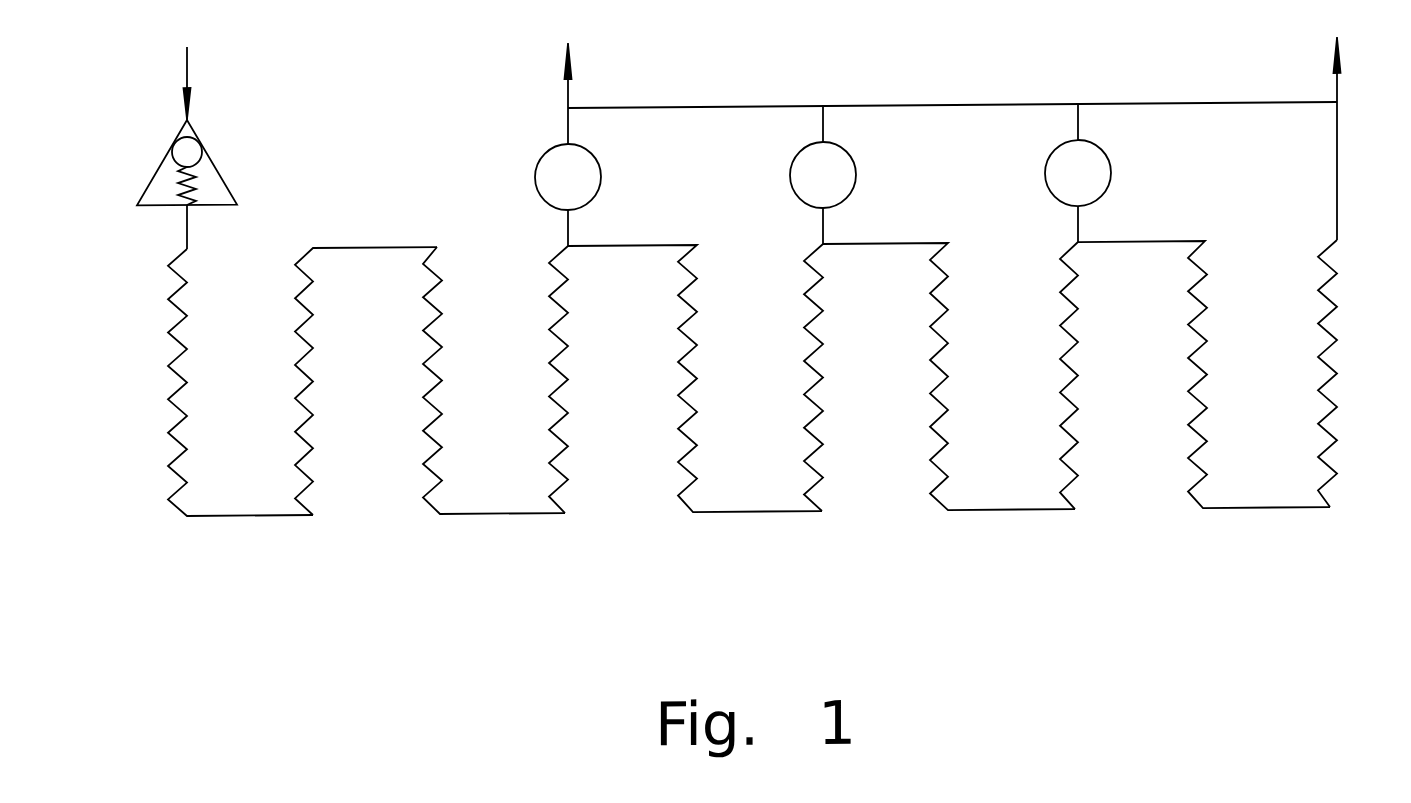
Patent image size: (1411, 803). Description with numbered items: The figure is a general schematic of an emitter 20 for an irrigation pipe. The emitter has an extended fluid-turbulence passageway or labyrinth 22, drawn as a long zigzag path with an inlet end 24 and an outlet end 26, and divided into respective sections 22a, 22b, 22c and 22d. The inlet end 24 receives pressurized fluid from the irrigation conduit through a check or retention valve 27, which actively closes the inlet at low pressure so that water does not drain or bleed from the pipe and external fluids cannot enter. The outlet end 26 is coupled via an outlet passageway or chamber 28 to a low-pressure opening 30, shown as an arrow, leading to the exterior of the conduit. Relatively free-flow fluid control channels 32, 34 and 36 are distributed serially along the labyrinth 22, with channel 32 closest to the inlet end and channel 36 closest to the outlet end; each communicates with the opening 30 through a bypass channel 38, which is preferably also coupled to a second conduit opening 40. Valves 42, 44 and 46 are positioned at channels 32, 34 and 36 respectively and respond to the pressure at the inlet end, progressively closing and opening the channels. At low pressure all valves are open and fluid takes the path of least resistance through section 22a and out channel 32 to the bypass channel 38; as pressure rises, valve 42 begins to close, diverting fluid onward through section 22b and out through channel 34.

The emitter 20 is at (423, 130).
The labyrinth 22 is at (752, 419).
The labyrinth section 22a is at (265, 516).
The labyrinth section 22b is at (772, 516).
The labyrinth section 22c is at (1028, 516).
The labyrinth section 22d is at (1282, 516).
The inlet end 24 is at (187, 248).
The outlet end 26 is at (1337, 249).
The check or retention valve 27 is at (145, 176).
The outlet passageway or chamber 28 is at (568, 101).
The low-pressure opening 30 is at (1333, 66).
The fluid control channel 32 is at (568, 231).
The fluid control channel 34 is at (823, 233).
The fluid control channel 36 is at (1078, 229).
The bypass channel 38 is at (902, 111).
The second conduit opening 40 is at (572, 68).
The valve 42 is at (534, 176).
The valve 44 is at (789, 178).
The valve 46 is at (1045, 177).